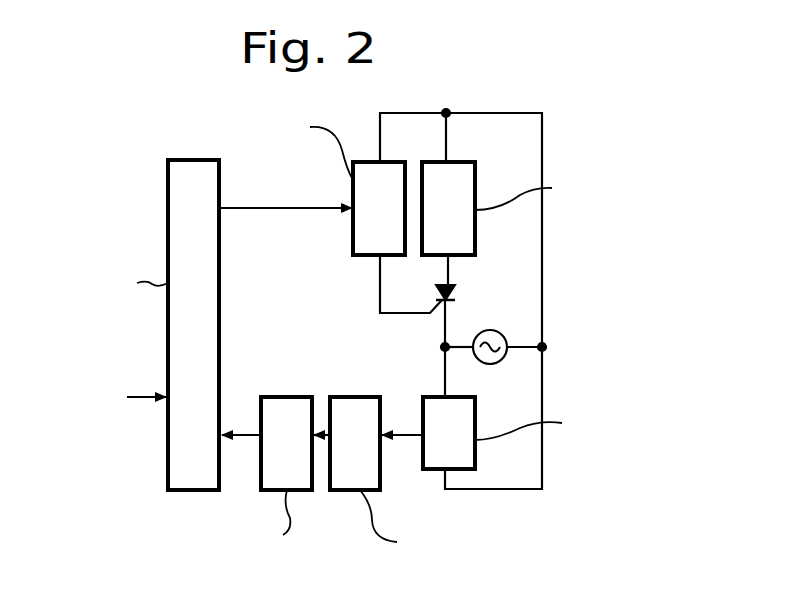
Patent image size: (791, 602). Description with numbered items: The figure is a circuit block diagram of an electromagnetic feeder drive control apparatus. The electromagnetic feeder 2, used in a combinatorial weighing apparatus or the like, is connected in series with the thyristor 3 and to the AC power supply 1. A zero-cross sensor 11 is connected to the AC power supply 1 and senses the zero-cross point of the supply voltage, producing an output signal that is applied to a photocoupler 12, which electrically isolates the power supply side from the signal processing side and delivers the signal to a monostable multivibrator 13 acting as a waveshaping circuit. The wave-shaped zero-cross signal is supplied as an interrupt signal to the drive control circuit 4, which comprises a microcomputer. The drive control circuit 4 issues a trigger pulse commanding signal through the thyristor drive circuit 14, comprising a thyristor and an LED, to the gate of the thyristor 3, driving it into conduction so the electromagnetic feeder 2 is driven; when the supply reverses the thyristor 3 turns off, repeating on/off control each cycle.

The AC power supply 1 is at (490, 332).
The electromagnetic feeder 2 is at (545, 202).
The thyristor 3 is at (454, 292).
The drive control circuit 4 is at (128, 325).
The zero-cross sensor 11 is at (562, 432).
The photocoupler 12 is at (448, 477).
The monostable multivibrator 13 is at (223, 485).
The thyristor drive circuit 14 is at (316, 169).